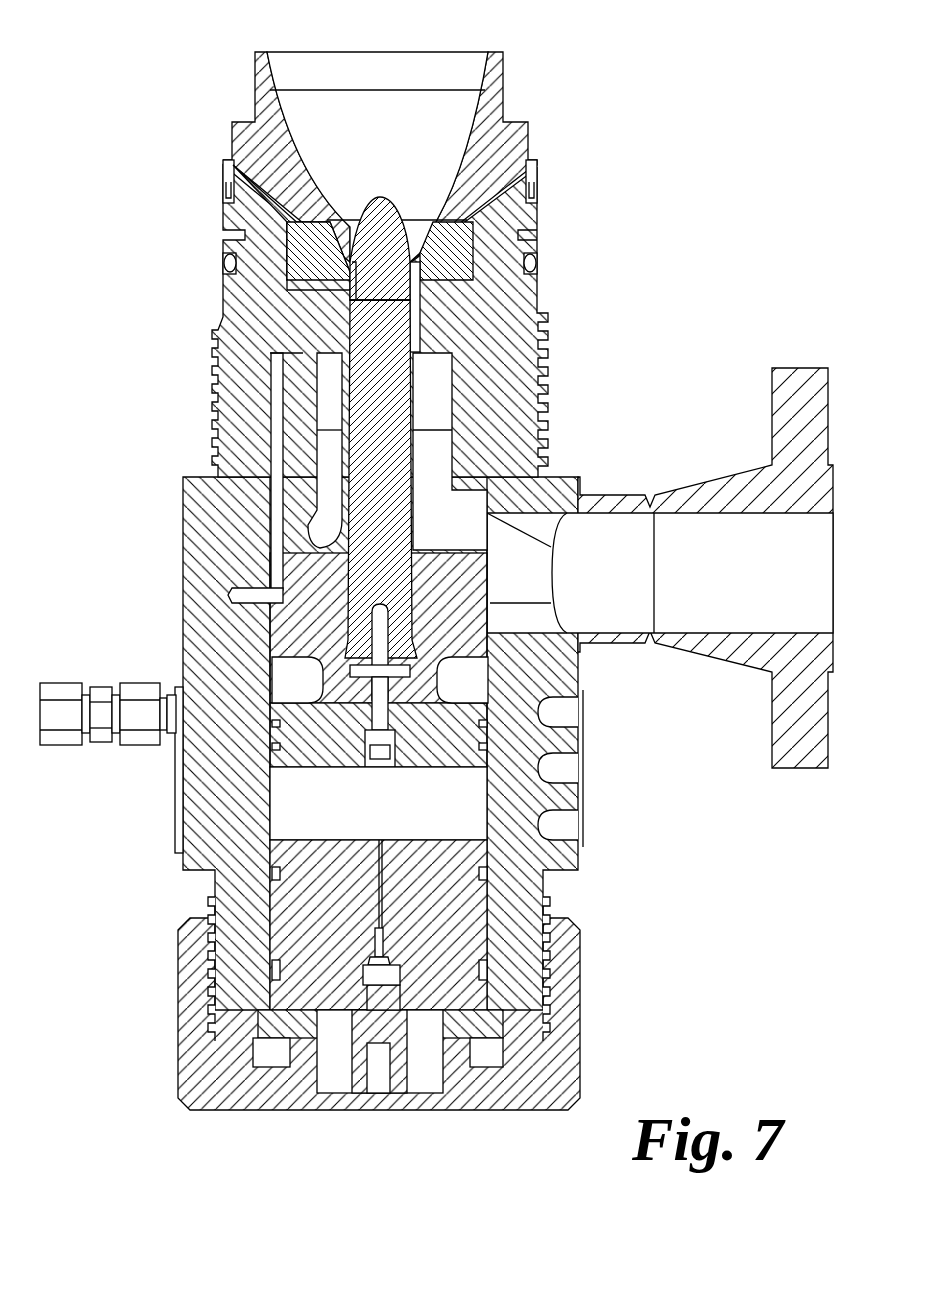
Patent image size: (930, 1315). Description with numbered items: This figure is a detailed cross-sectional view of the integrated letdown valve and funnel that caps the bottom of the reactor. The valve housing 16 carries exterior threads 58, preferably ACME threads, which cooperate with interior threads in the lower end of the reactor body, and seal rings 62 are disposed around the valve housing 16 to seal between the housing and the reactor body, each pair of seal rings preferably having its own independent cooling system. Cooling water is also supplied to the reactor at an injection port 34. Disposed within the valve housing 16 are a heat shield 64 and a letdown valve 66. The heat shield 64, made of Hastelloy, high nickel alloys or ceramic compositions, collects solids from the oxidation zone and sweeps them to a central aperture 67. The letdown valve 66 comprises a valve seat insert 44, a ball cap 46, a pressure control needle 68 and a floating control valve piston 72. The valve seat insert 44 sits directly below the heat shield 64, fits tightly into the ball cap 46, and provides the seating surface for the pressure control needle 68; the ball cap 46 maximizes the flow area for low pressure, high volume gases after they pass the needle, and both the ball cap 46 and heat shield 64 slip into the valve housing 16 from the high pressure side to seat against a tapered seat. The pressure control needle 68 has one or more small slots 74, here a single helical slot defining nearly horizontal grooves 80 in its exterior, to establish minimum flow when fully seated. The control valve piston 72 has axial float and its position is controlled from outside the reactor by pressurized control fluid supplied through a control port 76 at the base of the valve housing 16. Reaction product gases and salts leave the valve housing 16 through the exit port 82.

The valve housing 16 is at (182, 548).
The injection port 34 is at (55, 690).
The valve seat insert 44 is at (430, 300).
The ball cap 46 is at (327, 345).
The exterior threads 58 is at (552, 348).
The seal rings 62 is at (537, 266).
The heat shield 64 is at (286, 116).
The letdown valve 66 is at (537, 190).
The central aperture 67 is at (349, 266).
The pressure control needle 68 is at (408, 216).
The floating control valve piston 72 is at (304, 769).
The slots 74 is at (345, 268).
The control port 76 is at (375, 1085).
The grooves 80 is at (330, 296).
The exit port 82 is at (797, 576).